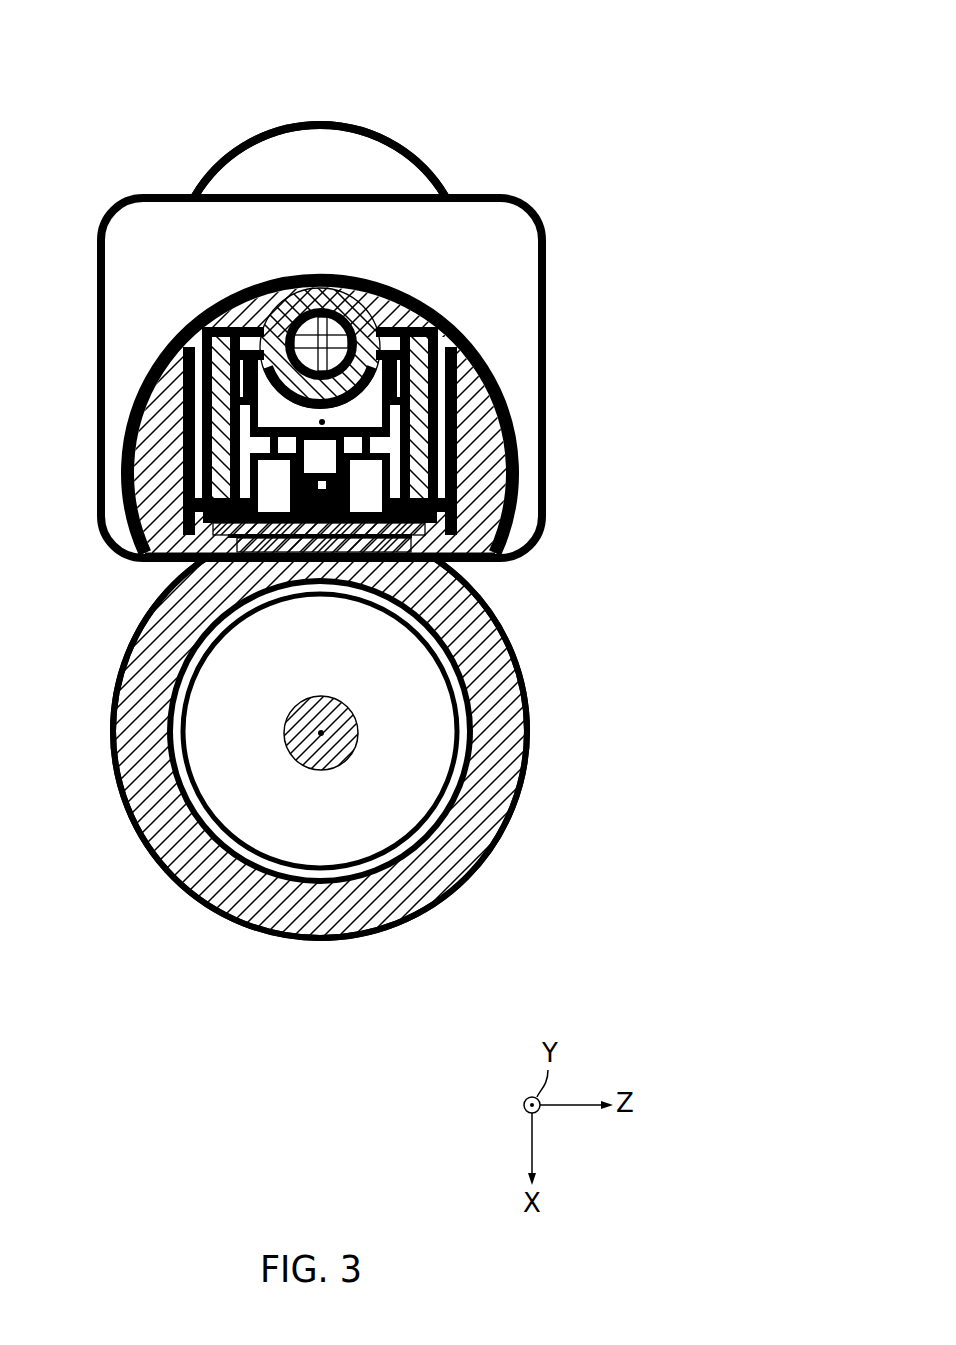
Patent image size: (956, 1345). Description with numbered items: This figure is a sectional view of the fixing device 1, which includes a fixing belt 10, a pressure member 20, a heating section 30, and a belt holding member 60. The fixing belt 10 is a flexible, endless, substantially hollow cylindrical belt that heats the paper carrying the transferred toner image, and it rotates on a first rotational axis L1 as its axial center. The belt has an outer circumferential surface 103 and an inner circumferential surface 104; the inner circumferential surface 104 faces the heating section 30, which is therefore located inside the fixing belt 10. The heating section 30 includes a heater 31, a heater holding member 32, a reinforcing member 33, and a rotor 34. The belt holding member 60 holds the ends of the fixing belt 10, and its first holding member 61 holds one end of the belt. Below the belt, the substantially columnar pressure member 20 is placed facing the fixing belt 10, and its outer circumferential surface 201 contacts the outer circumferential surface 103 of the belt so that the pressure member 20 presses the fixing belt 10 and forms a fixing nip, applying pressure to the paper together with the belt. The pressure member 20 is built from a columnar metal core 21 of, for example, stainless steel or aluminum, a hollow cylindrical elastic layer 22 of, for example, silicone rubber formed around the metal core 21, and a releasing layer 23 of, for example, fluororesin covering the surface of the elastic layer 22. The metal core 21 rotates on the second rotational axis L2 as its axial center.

The fixing device 1 is at (500, 70).
The belt holding member 60 is at (340, 143).
The first holding member 61 is at (340, 143).
The fixing belt 10 is at (290, 266).
The reinforcing member 33 is at (470, 338).
The inner circumferential surface 104 is at (250, 312).
The outer circumferential surface 103 is at (470, 337).
The heater holding member 32 is at (488, 478).
The heater 31 is at (475, 557).
The rotor 34 is at (352, 290).
The heating section 30 is at (398, 305).
The first rotational axis L1 is at (322, 422).
The pressure member 20 is at (548, 749).
The outer circumferential surface 201 is at (172, 883).
The releasing layer 23 is at (478, 853).
The elastic layer 22 is at (367, 840).
The metal core 21 is at (318, 773).
The second rotational axis L2 is at (321, 733).